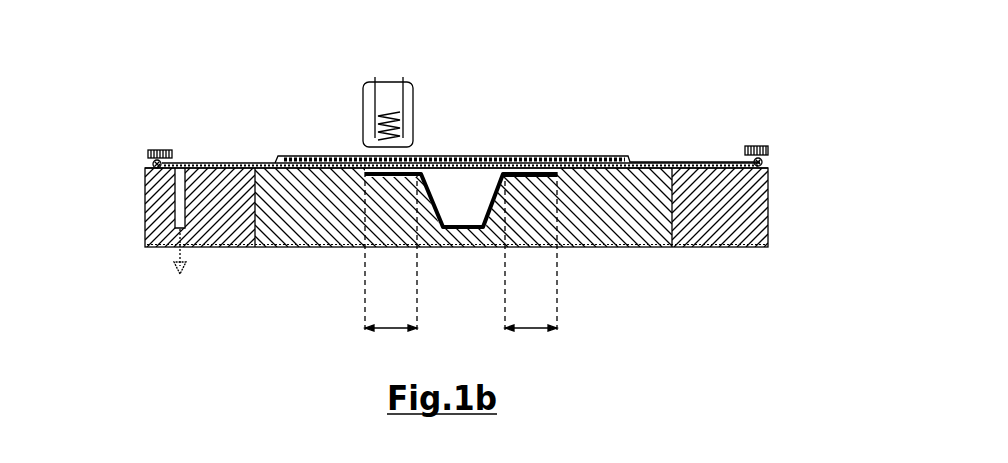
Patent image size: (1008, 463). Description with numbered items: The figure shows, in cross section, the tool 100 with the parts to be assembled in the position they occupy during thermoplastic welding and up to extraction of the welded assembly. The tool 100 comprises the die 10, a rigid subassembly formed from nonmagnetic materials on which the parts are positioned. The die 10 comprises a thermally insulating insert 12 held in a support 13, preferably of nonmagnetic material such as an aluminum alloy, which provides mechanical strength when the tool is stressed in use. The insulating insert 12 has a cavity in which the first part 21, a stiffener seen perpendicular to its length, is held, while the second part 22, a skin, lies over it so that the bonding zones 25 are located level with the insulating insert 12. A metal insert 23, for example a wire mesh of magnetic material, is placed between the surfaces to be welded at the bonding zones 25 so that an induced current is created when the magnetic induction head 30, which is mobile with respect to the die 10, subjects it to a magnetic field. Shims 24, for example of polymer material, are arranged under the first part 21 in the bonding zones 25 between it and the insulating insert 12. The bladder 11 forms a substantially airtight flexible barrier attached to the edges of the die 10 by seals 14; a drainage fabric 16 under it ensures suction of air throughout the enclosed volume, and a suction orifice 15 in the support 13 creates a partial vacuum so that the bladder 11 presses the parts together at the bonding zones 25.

The die 10 is at (770, 218).
The tool 100 is at (133, 162).
The bladder 11 is at (204, 163).
The insulating insert 12 is at (671, 248).
The support 13 is at (757, 248).
The seals 14 is at (764, 163).
The suction orifice 15 is at (178, 205).
The drainage fabric 16 is at (244, 163).
The first part 21 is at (418, 197).
The second part 22 is at (548, 160).
The metal insert 23 is at (495, 160).
The shims 24 is at (551, 176).
The bonding zones 25 is at (461, 251).
The magnetic induction head 30 is at (370, 102).